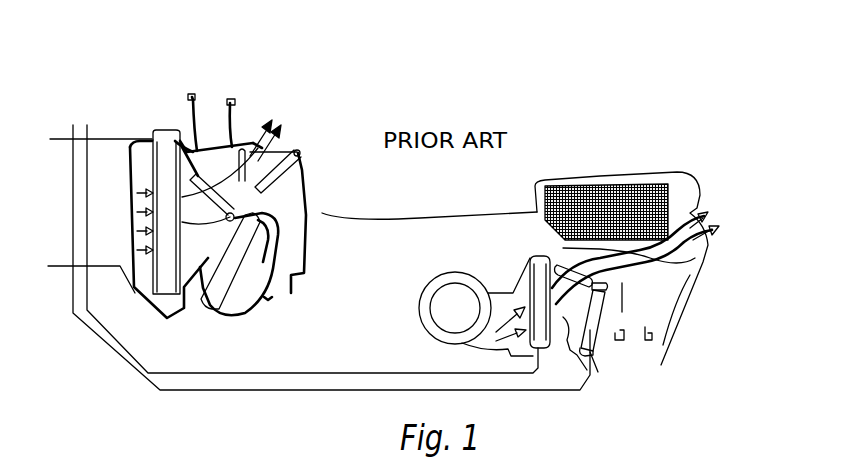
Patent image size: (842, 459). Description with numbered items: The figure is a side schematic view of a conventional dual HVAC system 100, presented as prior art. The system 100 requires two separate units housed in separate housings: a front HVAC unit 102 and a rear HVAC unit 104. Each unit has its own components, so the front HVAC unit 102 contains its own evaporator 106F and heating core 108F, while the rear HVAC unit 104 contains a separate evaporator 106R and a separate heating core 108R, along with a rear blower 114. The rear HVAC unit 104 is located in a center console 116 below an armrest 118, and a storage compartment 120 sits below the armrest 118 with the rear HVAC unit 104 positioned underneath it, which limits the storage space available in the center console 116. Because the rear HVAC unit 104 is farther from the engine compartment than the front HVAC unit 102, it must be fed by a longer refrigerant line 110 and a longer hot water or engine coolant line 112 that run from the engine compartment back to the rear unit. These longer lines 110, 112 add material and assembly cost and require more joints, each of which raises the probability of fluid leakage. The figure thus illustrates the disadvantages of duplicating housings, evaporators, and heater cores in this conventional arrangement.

The conventional dual HVAC system 100 is at (570, 132).
The front HVAC unit 102 is at (118, 106).
The rear HVAC unit 104 is at (711, 193).
The evaporator 106F is at (166, 130).
The evaporator 106R is at (556, 348).
The heating core 108F is at (232, 300).
The heating core 108R is at (597, 340).
The refrigerant line 110 is at (482, 375).
The hot water or engine coolant line 112 is at (310, 392).
The rear blower 114 is at (452, 270).
The center console 116 is at (418, 219).
The armrest 118 is at (646, 172).
The storage compartment 120 is at (580, 202).